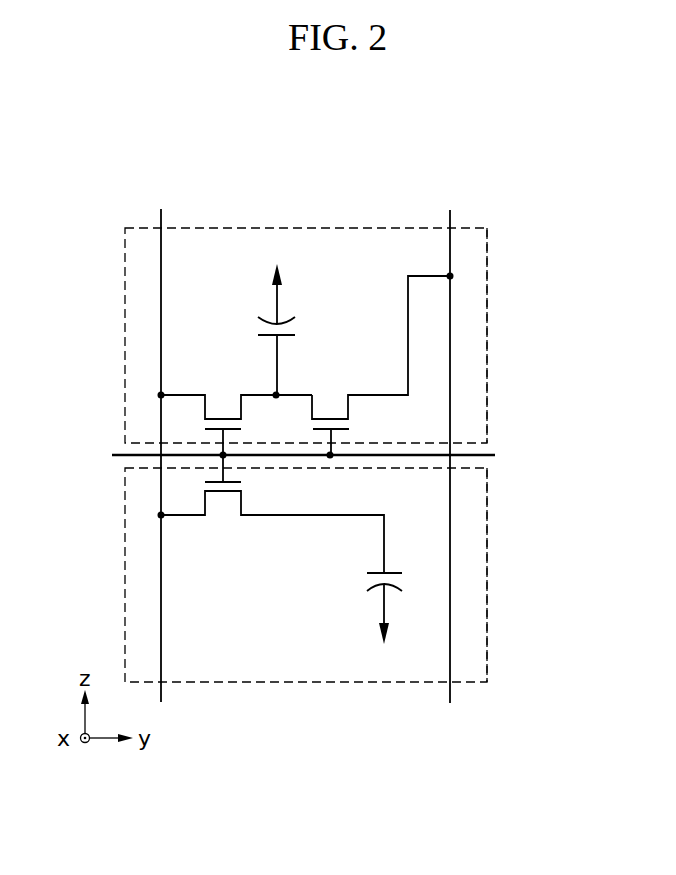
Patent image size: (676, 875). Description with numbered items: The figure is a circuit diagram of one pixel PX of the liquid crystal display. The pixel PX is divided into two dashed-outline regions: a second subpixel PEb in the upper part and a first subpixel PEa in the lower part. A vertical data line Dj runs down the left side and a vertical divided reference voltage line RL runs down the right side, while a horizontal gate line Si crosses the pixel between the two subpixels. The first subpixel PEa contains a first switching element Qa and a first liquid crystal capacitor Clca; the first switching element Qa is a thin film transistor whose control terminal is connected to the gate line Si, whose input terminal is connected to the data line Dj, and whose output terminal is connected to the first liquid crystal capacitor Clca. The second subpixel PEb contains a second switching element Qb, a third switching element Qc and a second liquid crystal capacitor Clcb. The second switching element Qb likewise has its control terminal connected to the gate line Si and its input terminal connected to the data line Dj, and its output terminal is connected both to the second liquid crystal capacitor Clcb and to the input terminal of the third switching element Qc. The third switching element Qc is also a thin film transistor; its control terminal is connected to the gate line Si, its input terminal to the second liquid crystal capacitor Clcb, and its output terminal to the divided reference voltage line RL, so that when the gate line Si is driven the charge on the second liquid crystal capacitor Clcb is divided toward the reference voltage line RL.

The pixel PX is at (91, 213).
The data line Dj is at (161, 441).
The divided reference voltage line RL is at (450, 442).
The gate line Si is at (291, 456).
The first switching element Qa is at (272, 514).
The second switching element Qb is at (236, 413).
The third switching element Qc is at (381, 365).
The first liquid crystal capacitor Clca is at (361, 606).
The second liquid crystal capacitor Clcb is at (299, 331).
The first subpixel PEa is at (487, 573).
The second subpixel PEb is at (487, 335).